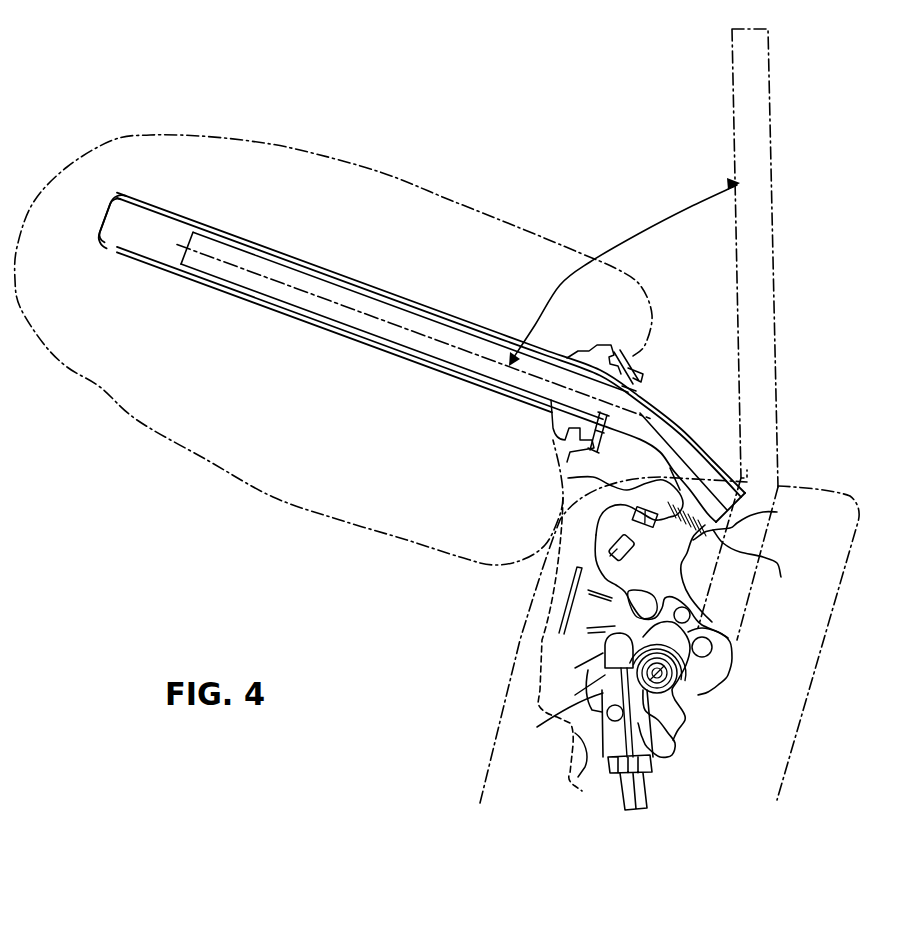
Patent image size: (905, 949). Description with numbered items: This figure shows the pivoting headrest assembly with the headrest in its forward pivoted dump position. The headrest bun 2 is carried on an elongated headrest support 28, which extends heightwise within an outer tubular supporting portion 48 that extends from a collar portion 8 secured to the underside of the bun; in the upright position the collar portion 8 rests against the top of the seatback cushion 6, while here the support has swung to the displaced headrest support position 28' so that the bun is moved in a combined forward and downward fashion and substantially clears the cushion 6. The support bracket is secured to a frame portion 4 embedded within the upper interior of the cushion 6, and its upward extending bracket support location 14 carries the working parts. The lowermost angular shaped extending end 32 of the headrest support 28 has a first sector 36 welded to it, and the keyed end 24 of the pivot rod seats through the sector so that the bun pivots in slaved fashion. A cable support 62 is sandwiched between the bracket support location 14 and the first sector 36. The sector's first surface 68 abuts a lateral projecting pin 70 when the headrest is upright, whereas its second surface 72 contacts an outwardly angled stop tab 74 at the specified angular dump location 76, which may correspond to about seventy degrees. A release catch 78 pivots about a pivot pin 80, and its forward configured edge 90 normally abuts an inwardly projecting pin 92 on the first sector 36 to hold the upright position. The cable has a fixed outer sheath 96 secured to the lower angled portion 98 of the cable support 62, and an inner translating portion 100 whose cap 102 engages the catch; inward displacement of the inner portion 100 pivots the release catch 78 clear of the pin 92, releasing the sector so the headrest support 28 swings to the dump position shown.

The headrest bun 2 is at (70, 372).
The frame portion 4 is at (537, 686).
The cushion 6 is at (480, 781).
The collar portion 8 is at (632, 385).
The bracket support location 14 is at (592, 598).
The keyed end of pivot rod 24 is at (620, 545).
The headrest support 28 is at (770, 334).
The headrest support position 28' is at (413, 321).
The angular shaped extending end 32 is at (678, 436).
The first sector 36 is at (777, 512).
The outer tubular supporting portion 48 is at (163, 210).
The cable support 62 is at (681, 682).
The first surface 68 is at (740, 588).
The lateral projecting pin 70 is at (707, 649).
The second surface 72 is at (652, 483).
The stop tab 74 is at (605, 488).
The angular dump location 76 is at (625, 223).
The release catch 78 is at (563, 723).
The pivot pin 80 is at (672, 700).
The forward configured edge 90 is at (590, 646).
The inwardly projecting pin 92 is at (686, 615).
The fixed outer sheath 96 is at (645, 797).
The lower angled portion 98 is at (604, 780).
The inner translating portion 100 is at (605, 742).
The cap 102 is at (600, 655).